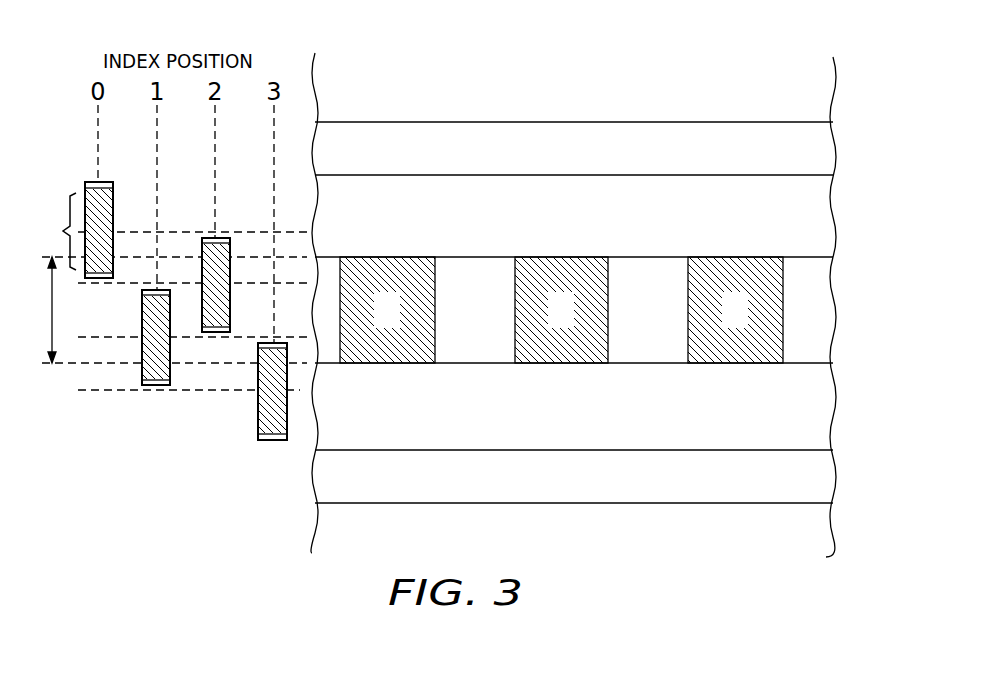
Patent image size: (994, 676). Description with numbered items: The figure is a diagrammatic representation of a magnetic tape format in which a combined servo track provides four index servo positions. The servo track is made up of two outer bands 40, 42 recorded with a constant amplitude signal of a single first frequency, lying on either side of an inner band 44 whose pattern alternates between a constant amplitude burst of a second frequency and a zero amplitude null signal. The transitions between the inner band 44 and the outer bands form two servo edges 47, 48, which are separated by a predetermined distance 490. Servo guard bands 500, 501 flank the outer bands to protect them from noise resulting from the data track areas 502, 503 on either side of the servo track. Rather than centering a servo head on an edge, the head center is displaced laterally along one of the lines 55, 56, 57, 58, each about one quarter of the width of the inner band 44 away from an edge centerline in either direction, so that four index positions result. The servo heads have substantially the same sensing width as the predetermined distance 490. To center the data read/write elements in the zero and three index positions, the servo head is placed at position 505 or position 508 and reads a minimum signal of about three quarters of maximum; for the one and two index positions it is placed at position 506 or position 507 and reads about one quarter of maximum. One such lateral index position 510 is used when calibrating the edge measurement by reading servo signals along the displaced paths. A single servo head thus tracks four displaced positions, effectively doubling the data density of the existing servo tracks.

The outer band 40 is at (833, 218).
The outer band 42 is at (833, 410).
The inner band 44 is at (853, 302).
The servo edge 47 is at (648, 256).
The servo edge 48 is at (650, 364).
The displaced index servo position line 55 is at (250, 231).
The displaced index servo position line 56 is at (123, 284).
The displaced index servo position line 57 is at (112, 338).
The displaced index servo position line 58 is at (218, 391).
The predetermined distance 490 is at (43, 341).
The servo guard band 500 is at (833, 152).
The servo guard band 501 is at (835, 483).
The data track area 502 is at (833, 97).
The data track area 503 is at (830, 540).
The servo head position 505 is at (97, 182).
The servo head position 506 is at (155, 391).
The servo head position 507 is at (210, 237).
The servo head position 508 is at (268, 441).
The index position 510 is at (49, 231).